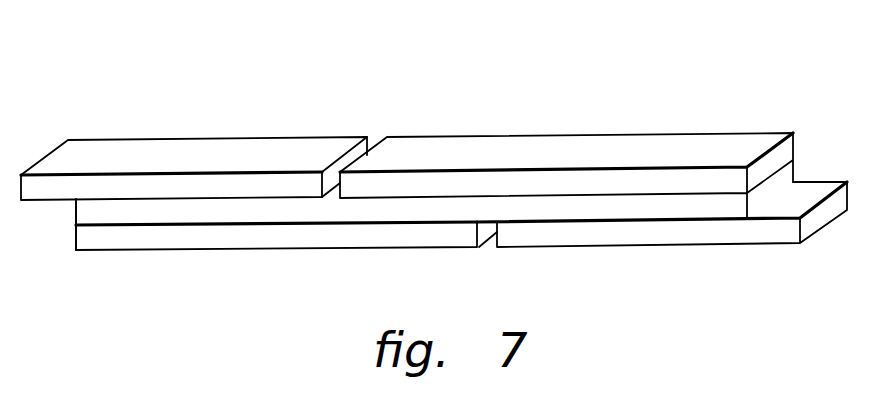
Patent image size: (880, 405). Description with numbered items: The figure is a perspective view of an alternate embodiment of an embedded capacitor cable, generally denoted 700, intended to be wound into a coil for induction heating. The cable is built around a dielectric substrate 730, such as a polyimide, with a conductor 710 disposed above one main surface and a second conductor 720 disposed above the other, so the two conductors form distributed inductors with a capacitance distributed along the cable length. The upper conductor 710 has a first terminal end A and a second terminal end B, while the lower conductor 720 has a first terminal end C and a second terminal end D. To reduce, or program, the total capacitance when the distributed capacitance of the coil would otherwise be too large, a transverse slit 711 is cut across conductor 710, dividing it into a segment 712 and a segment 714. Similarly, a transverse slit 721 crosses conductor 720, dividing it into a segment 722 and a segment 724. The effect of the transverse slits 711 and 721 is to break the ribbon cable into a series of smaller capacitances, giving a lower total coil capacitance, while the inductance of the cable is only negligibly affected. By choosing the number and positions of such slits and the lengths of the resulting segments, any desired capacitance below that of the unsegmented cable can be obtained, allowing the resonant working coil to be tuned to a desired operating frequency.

The cable embodiment 700 is at (523, 56).
The conductor 710 is at (407, 119).
The transverse slit 711 is at (378, 137).
The segment 712 is at (153, 147).
The segment 714 is at (552, 143).
The conductor 720 is at (434, 283).
The transverse slit 721 is at (488, 248).
The segment 722 is at (298, 246).
The segment 724 is at (742, 235).
The dielectric substrate 730 is at (75, 210).
The first terminal end A is at (55, 145).
The second terminal end B is at (787, 148).
The first terminal end C is at (77, 240).
The second terminal end D is at (812, 230).